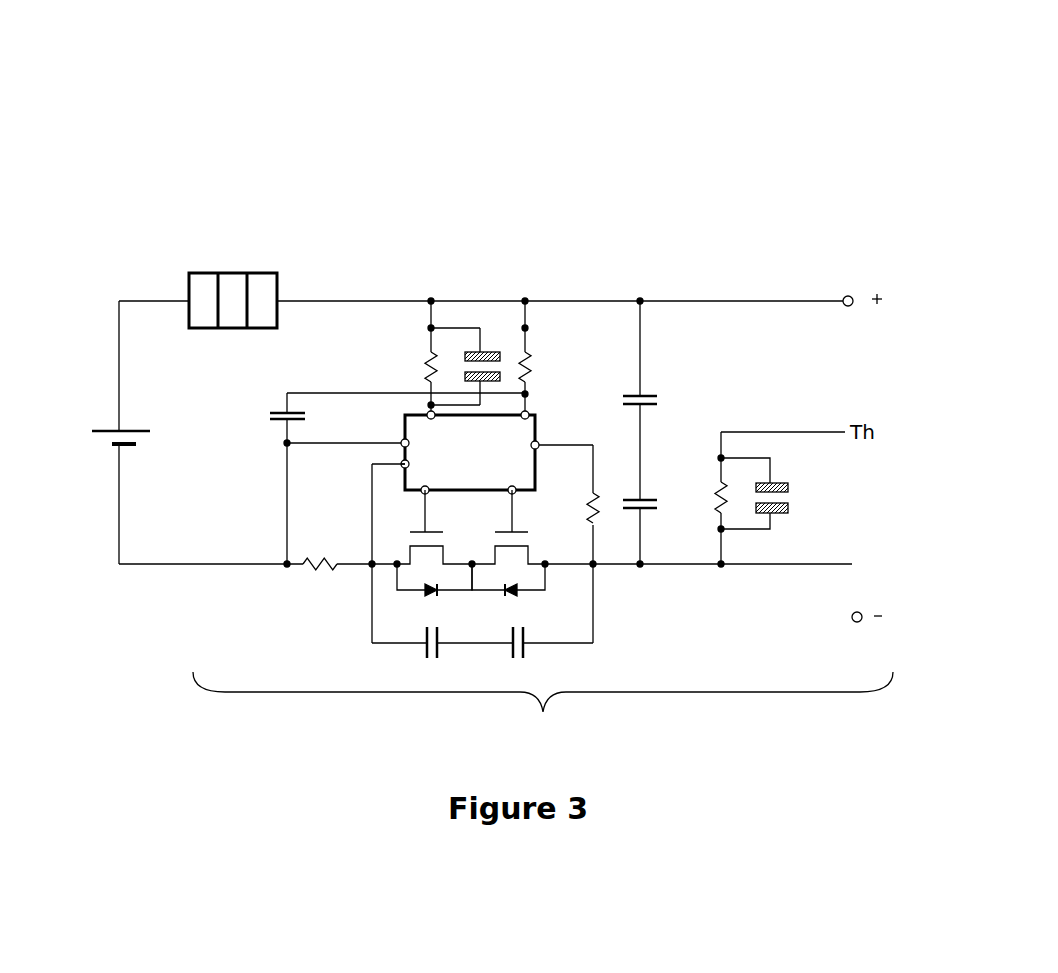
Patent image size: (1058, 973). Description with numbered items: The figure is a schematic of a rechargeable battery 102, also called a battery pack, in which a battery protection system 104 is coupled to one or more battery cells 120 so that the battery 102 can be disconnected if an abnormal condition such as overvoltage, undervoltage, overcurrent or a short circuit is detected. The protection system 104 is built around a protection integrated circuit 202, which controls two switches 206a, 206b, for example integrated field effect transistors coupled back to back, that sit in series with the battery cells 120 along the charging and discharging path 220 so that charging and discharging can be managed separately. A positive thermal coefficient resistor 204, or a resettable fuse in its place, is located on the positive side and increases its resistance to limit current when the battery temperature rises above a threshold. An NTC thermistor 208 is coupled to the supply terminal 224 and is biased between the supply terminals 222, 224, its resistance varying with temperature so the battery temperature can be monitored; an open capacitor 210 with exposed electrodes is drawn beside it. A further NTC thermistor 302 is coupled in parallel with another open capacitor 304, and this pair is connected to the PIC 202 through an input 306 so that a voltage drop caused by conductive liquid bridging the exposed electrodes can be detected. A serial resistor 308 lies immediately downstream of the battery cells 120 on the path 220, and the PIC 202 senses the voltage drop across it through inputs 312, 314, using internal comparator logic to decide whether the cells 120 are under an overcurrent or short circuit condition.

The rechargeable battery 102 is at (860, 92).
The battery protection system 104 is at (543, 707).
The battery cells 120 is at (100, 431).
The protection integrated circuit 202 is at (470, 452).
The positive thermal coefficient resistor 204 is at (220, 273).
The first switch 206a is at (436, 594).
The second switch 206b is at (520, 594).
The NTC thermistor 208 is at (716, 500).
The open capacitor 210 is at (788, 496).
The charging and discharging path 220 is at (157, 565).
The supply terminal 222 is at (850, 306).
The supply terminal 224 is at (862, 622).
The NTC thermistor 302 is at (413, 376).
The open capacitor 304 is at (510, 332).
The input of the PIC 306 is at (430, 411).
The serial resistor 308 is at (320, 572).
The input of the PIC 312 is at (400, 444).
The input of the PIC 314 is at (403, 467).